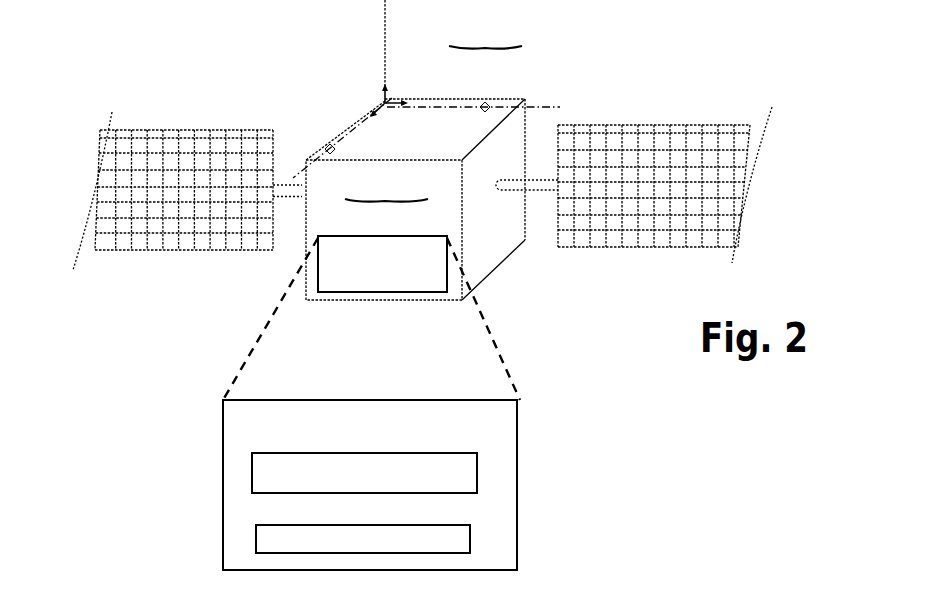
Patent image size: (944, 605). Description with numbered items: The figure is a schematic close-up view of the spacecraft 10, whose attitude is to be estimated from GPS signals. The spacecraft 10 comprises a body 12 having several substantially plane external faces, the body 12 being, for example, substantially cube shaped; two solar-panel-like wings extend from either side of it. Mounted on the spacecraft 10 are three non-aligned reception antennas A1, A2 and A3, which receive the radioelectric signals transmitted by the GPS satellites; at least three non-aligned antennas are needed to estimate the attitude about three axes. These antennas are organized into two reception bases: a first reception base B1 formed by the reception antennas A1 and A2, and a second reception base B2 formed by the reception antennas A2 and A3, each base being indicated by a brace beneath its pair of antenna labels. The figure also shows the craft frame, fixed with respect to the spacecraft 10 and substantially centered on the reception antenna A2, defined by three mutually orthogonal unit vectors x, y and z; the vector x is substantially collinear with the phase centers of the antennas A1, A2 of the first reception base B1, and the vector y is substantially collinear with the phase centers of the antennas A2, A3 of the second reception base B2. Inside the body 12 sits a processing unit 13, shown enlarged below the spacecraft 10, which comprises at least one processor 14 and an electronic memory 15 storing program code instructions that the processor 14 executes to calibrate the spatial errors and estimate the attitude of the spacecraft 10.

The spacecraft 10 is at (571, 85).
The body 12 is at (487, 243).
The processing unit 13 is at (371, 403).
The processor 14 is at (364, 473).
The electronic memory 15 is at (363, 539).
The reception antenna A1 is at (330, 150).
The reception antenna A2 is at (390, 98).
The reception antenna A3 is at (487, 103).
The first reception base B1 is at (386, 214).
The second reception base B2 is at (485, 33).